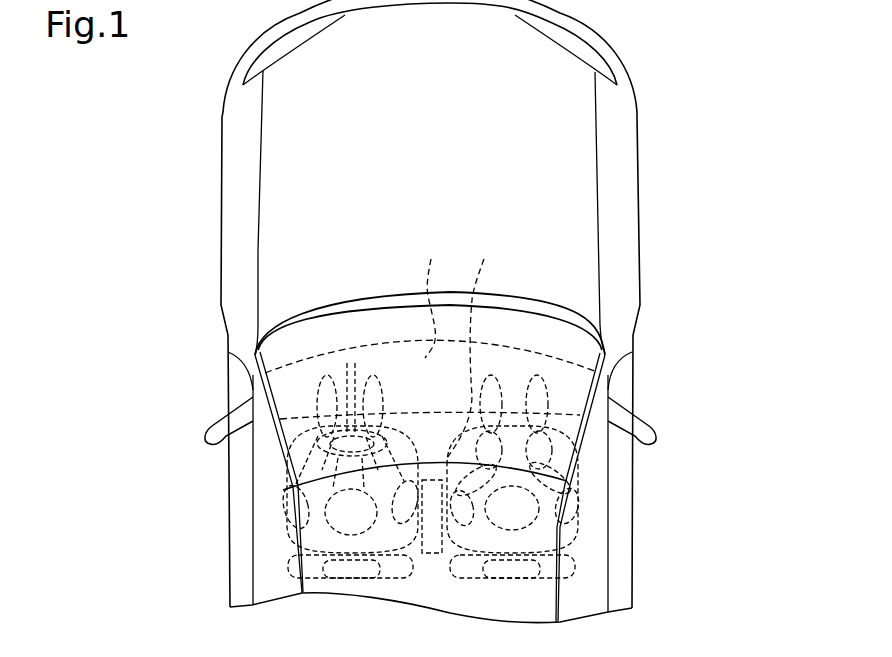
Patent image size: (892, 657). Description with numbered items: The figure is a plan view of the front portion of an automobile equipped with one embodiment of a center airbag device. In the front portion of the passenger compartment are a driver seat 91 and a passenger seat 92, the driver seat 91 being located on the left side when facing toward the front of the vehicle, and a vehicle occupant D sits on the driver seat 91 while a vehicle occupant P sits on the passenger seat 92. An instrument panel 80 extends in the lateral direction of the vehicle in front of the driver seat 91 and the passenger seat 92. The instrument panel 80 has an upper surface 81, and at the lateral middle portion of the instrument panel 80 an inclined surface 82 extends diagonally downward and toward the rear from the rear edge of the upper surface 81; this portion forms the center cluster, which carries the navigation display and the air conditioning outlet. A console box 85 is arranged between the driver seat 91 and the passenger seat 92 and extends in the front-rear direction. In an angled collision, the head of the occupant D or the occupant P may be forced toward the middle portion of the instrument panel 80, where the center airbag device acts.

The instrument panel 80 is at (458, 326).
The upper surface 81 is at (430, 297).
The inclined surface 82 is at (473, 347).
The console box 85 is at (431, 553).
The driver seat 91 is at (290, 566).
The passenger seat 92 is at (575, 566).
The vehicle occupant D is at (272, 497).
The vehicle occupant P is at (594, 496).